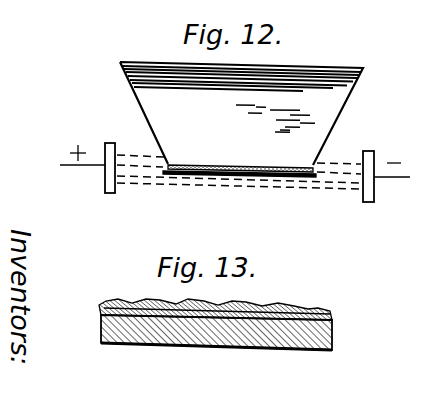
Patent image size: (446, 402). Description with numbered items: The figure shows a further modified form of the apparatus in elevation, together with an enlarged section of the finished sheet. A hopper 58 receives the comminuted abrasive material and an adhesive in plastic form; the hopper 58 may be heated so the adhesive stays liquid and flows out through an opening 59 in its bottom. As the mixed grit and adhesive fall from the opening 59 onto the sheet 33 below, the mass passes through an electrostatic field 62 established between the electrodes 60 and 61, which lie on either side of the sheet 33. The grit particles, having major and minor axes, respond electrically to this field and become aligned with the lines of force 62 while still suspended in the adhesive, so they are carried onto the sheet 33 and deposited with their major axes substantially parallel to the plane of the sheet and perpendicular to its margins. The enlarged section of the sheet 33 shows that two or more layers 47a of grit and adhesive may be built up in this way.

In FIG. 12, the hopper 58 is at (336, 128).
In FIG. 12, the opening 59 is at (226, 165).
In FIG. 12, the sheet 33 is at (235, 177).
In FIG. 13, the sheet 33 is at (267, 338).
In FIG. 12, the electrostatic field 62 is at (331, 176).
In FIG. 12, the electrode 60 is at (109, 193).
In FIG. 12, the electrode 61 is at (368, 202).
In FIG. 13, the rough surface layer 47a is at (270, 306).